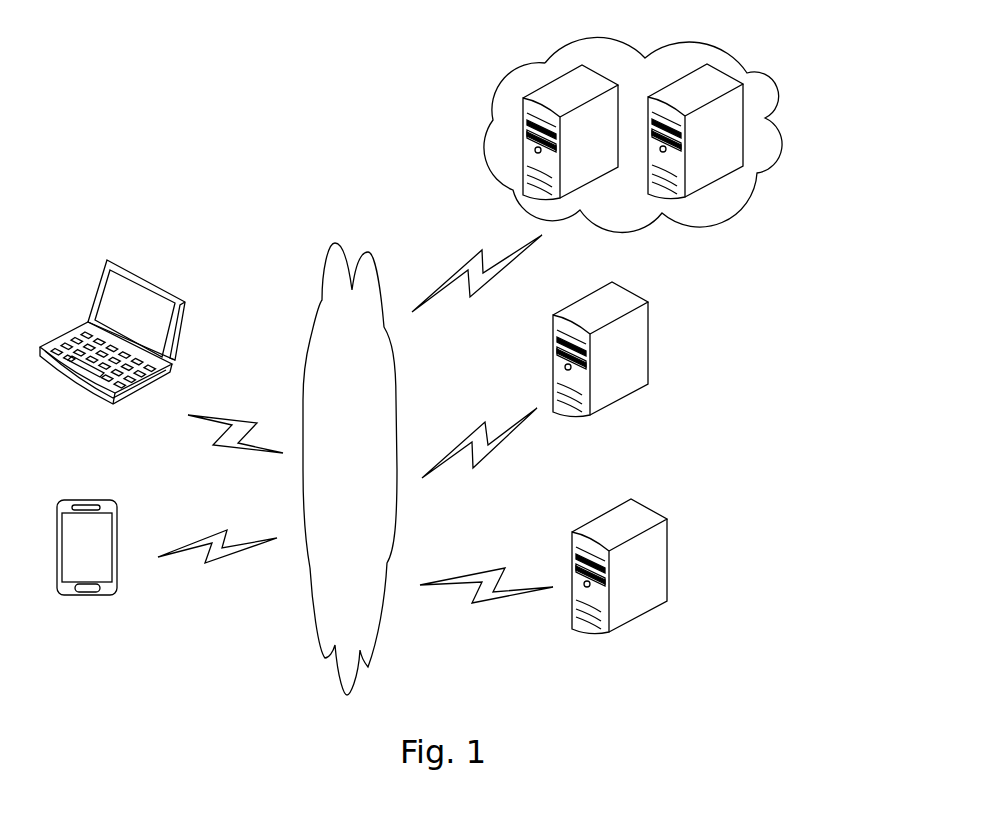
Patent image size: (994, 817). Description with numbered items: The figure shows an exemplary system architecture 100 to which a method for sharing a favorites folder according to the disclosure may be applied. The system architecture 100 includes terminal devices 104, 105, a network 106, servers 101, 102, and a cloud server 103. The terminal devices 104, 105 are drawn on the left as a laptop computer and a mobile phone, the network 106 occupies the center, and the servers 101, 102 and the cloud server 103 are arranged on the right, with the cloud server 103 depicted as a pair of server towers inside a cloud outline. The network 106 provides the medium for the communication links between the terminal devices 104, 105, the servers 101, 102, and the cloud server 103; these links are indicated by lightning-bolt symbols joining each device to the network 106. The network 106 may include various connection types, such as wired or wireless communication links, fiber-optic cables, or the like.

The system architecture 100 is at (832, 38).
The server 101 is at (600, 366).
The server 102 is at (619, 578).
The cloud server 103 is at (633, 150).
The terminal device 104 is at (112, 347).
The terminal device 105 is at (87, 565).
The network 106 is at (350, 469).